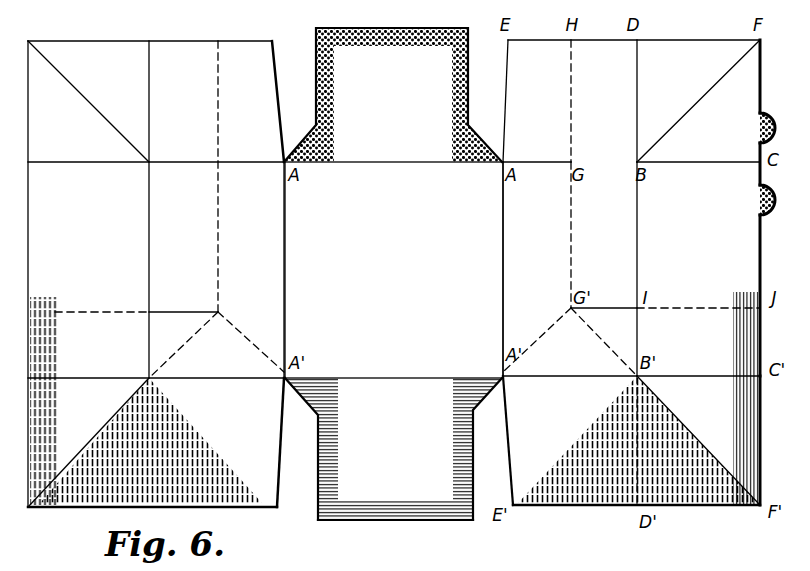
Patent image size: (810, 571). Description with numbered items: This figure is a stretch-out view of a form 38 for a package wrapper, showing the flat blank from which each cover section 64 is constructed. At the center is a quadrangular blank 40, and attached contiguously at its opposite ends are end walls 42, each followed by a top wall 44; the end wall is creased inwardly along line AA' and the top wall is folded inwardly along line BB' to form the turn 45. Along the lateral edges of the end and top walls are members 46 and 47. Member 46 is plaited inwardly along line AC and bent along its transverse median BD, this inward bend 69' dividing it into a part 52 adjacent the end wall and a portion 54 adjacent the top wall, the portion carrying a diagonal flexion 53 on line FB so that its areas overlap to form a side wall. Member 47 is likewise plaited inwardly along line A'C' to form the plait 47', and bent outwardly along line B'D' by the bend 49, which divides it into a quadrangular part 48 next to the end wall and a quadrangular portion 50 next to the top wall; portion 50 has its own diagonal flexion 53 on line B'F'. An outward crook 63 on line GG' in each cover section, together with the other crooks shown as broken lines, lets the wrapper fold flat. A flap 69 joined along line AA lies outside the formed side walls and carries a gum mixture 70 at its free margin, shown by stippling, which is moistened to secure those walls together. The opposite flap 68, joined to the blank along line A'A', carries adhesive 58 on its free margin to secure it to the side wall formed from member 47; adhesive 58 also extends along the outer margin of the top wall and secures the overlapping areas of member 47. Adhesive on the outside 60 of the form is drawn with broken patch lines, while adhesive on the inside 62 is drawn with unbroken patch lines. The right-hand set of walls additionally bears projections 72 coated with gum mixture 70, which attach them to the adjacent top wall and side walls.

The cover section 64 is at (394, 27).
The flap 69 is at (393, 95).
The gum mixture 70 is at (462, 88).
The quadrangular blank 40 is at (394, 270).
The flap 68 is at (393, 449).
The form 38 is at (395, 532).
The adhesive 58 is at (330, 502).
The member 46 is at (537, 101).
The part 52 is at (573, 127).
The inward bend 69' is at (655, 101).
The portion 54 is at (698, 127).
The diagonal flexion 53 is at (705, 107).
The projection 72 is at (770, 116).
The end wall 42 is at (529, 269).
The outward crook 63 is at (573, 232).
The turn 45 is at (639, 253).
The top wall 44 is at (665, 279).
The plait 47' is at (698, 362).
The member 47 is at (570, 399).
The quadrangular part 48 is at (525, 440).
The bend 49 is at (640, 424).
The quadrangular portion 50 is at (731, 440).
The inside 62 is at (745, 465).
The outside 60 is at (548, 507).